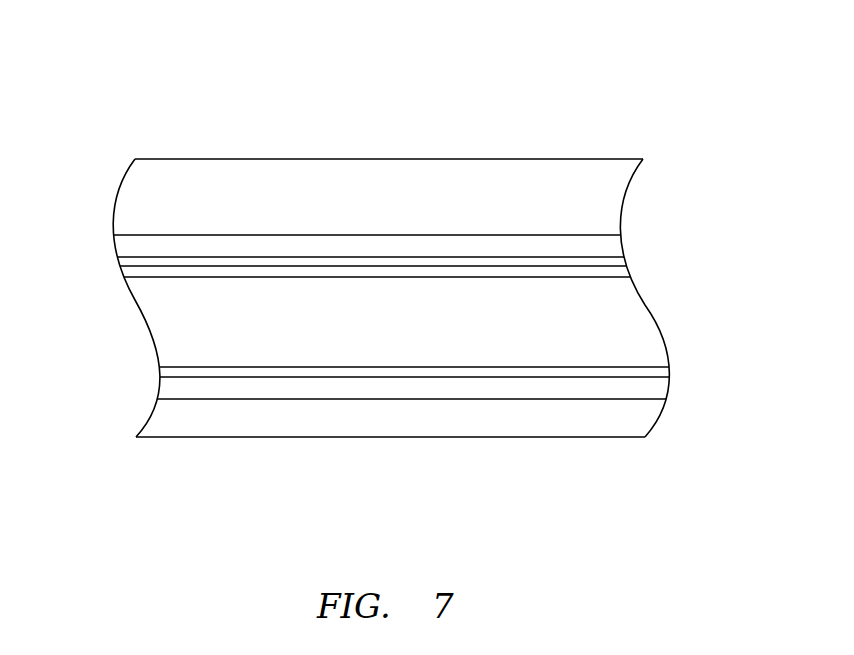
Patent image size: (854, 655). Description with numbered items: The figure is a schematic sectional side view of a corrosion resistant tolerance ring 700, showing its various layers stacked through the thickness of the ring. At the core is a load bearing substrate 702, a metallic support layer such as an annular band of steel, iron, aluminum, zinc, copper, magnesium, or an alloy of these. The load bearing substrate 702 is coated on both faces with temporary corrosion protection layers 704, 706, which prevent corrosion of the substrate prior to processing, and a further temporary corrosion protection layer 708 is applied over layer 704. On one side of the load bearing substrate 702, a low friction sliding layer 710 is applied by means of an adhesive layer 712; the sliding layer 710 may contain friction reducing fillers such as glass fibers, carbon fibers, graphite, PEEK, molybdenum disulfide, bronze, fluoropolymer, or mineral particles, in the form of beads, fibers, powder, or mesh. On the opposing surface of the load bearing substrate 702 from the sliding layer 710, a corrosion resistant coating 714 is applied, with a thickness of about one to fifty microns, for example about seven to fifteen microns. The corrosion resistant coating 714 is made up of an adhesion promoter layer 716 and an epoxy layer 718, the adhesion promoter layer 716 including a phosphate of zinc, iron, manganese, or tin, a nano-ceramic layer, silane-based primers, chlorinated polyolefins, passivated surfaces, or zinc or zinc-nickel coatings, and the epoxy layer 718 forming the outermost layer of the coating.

The tolerance ring 700 is at (672, 49).
The load bearing substrate 702 is at (147, 320).
The temporary corrosion protection layer 704 is at (629, 272).
The temporary corrosion protection layer 706 is at (670, 372).
The temporary corrosion protection layer 708 is at (626, 262).
The sliding layer 710 is at (113, 210).
The adhesive layer 712 is at (113, 245).
The corrosion resistant coating 714 is at (675, 375).
The adhesion promoter layer 716 is at (157, 386).
The epoxy layer 718 is at (145, 422).